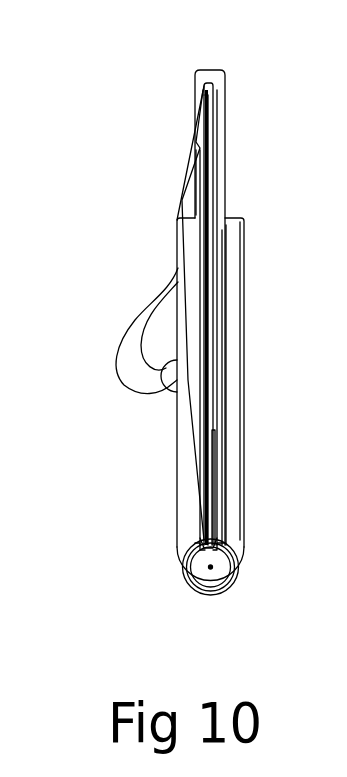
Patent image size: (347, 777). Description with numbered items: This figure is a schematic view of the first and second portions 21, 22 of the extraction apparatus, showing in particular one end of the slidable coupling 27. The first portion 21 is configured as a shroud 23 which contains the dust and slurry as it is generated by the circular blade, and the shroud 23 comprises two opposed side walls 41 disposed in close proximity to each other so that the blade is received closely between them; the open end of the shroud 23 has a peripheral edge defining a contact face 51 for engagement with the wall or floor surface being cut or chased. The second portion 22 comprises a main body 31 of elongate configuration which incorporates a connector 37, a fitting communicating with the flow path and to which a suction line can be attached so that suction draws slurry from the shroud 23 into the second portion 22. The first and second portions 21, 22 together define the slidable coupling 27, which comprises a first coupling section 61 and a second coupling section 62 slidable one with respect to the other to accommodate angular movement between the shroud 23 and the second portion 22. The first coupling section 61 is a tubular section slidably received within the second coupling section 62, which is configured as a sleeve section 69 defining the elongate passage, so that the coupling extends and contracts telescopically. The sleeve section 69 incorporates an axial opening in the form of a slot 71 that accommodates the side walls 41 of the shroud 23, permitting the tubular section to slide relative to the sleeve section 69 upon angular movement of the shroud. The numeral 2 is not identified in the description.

The connector assembly 2 is at (346, 201).
The first portion 21 is at (187, 457).
The second portion 22 is at (232, 491).
The shroud 23 is at (220, 467).
The slidable coupling 27 is at (180, 588).
The main body 31 is at (233, 424).
The connector 37 is at (130, 345).
The side walls 41 is at (193, 527).
The contact face 51 is at (180, 370).
The first coupling section 61 is at (236, 583).
The second coupling section 62 is at (237, 527).
The sleeve section 69 is at (233, 352).
The slot 71 is at (195, 540).